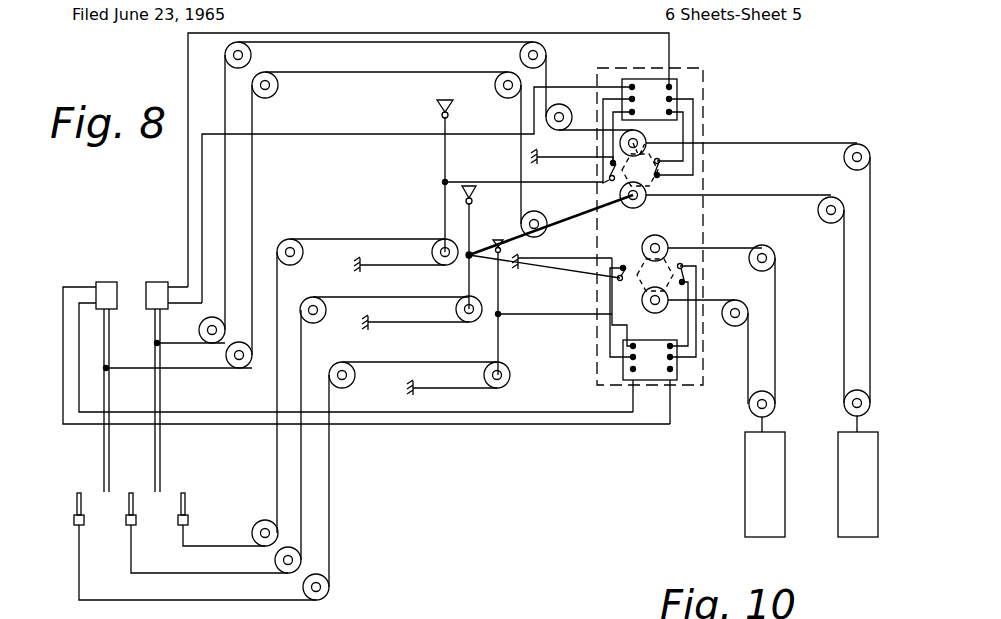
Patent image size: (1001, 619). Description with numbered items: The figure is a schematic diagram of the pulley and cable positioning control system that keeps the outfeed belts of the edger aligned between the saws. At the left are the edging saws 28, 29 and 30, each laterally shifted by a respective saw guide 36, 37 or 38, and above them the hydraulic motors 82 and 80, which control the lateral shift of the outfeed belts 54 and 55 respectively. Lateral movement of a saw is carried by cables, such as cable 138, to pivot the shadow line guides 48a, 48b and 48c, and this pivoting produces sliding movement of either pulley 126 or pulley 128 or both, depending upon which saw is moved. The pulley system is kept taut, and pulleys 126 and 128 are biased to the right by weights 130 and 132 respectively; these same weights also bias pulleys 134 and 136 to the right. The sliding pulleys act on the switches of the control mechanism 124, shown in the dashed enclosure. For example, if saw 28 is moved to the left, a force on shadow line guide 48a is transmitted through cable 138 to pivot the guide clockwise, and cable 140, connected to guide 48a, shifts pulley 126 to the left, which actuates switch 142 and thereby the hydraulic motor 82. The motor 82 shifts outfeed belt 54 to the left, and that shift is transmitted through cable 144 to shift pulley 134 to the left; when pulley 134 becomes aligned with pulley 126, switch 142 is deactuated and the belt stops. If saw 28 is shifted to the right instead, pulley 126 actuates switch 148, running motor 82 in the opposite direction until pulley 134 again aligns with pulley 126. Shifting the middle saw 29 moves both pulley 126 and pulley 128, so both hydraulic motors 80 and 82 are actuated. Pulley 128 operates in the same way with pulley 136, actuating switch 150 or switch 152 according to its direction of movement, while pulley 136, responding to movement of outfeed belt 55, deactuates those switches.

The edging saw 28 is at (82, 505).
The edging saw 29 is at (134, 505).
The edging saw 30 is at (186, 505).
The saw guide 36 is at (84, 523).
The saw guide 37 is at (136, 523).
The saw guide 38 is at (188, 523).
The shadow line guide 48a is at (501, 332).
The shadow line guide 48b is at (476, 248).
The shadow line guide 48c is at (445, 212).
The outfeed belt 54 is at (109, 483).
The outfeed belt 55 is at (161, 460).
The hydraulic motor 80 is at (157, 288).
The hydraulic motor 82 is at (107, 288).
The control mechanism 124 is at (721, 90).
The pulley 126 is at (663, 310).
The pulley 128 is at (646, 204).
The weight 130 is at (752, 500).
The weight 132 is at (852, 480).
The pulley 134 is at (665, 246).
The pulley 136 is at (646, 140).
The cable 138 is at (330, 568).
The cable 140 is at (548, 318).
The switch 142 is at (614, 278).
The cable 144 is at (345, 76).
The switch 148 is at (690, 281).
The switch 150 is at (604, 166).
The switch 152 is at (688, 171).